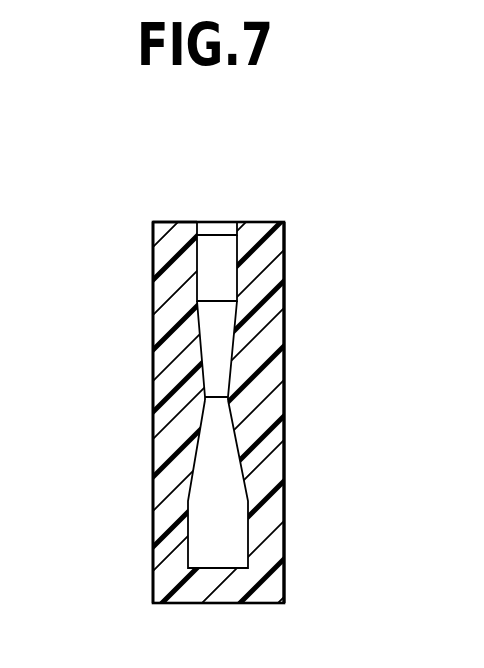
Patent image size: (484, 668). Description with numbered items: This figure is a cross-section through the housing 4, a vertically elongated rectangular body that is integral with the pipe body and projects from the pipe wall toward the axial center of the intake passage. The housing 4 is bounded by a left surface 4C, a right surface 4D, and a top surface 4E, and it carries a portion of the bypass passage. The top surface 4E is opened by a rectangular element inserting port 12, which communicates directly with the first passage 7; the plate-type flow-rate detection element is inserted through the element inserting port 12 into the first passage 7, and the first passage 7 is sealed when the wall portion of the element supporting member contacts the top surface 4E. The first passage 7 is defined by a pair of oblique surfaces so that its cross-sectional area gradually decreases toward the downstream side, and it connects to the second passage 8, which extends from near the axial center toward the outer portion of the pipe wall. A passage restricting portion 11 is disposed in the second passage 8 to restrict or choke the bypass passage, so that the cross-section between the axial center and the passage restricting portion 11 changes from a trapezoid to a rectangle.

The housing 4 is at (275, 241).
The left surface 4C is at (278, 470).
The right surface 4D is at (152, 521).
The top surface 4E is at (162, 222).
The element inserting port 12 is at (206, 232).
The first passage 7 is at (222, 258).
The passage restricting portion 11 is at (216, 400).
The second passage 8 is at (215, 457).